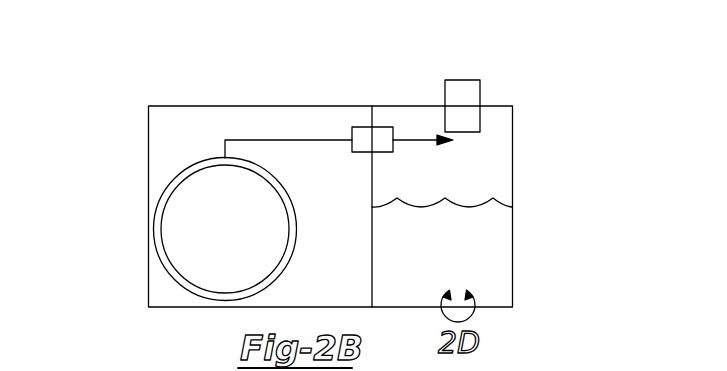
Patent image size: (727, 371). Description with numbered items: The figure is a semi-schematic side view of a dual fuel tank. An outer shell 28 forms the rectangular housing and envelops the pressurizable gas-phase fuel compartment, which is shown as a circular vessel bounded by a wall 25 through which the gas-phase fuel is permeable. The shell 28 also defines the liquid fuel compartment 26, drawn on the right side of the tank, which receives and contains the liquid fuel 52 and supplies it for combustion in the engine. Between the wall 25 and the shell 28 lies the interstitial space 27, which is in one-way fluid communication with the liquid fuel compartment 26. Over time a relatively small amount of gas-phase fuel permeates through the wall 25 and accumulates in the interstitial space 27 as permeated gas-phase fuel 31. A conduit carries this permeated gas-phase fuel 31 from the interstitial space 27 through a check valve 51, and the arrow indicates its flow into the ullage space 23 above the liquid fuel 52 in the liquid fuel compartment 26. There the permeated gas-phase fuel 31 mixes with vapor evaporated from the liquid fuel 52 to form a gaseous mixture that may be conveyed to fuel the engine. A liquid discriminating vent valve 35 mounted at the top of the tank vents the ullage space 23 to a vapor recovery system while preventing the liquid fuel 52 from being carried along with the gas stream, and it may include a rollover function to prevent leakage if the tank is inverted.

The ullage space 23 is at (490, 155).
The wall 25 is at (166, 270).
The liquid fuel compartment 26 is at (410, 268).
The interstitial space 27 is at (166, 127).
The shell 28 is at (166, 270).
The permeated gas-phase fuel 31 is at (187, 140).
The liquid discriminating vent valve 35 is at (462, 80).
The check valve 51 is at (378, 138).
The liquid fuel 52 is at (480, 244).